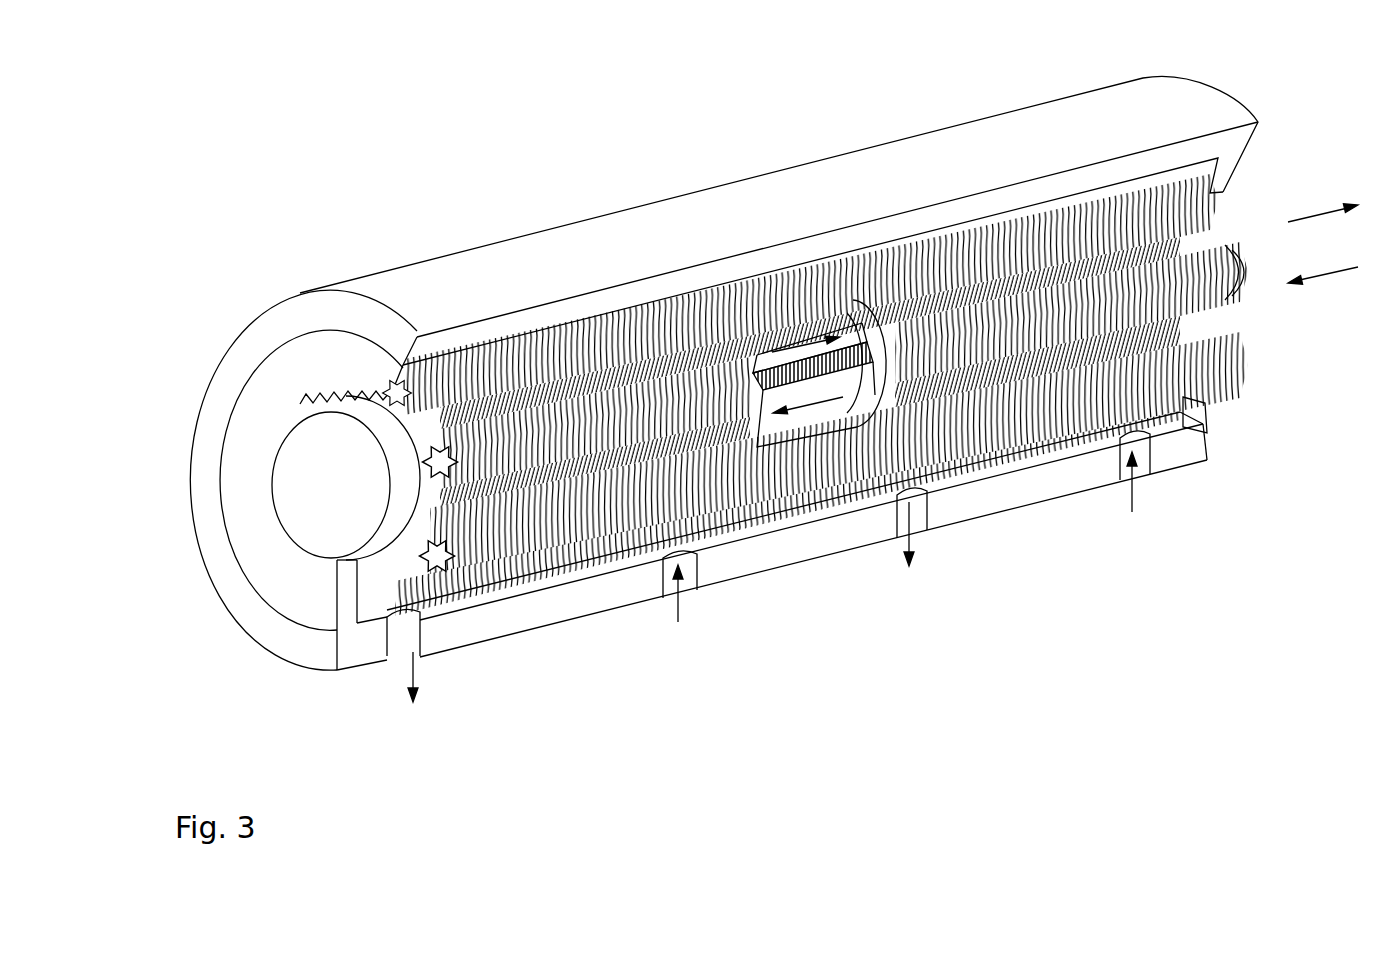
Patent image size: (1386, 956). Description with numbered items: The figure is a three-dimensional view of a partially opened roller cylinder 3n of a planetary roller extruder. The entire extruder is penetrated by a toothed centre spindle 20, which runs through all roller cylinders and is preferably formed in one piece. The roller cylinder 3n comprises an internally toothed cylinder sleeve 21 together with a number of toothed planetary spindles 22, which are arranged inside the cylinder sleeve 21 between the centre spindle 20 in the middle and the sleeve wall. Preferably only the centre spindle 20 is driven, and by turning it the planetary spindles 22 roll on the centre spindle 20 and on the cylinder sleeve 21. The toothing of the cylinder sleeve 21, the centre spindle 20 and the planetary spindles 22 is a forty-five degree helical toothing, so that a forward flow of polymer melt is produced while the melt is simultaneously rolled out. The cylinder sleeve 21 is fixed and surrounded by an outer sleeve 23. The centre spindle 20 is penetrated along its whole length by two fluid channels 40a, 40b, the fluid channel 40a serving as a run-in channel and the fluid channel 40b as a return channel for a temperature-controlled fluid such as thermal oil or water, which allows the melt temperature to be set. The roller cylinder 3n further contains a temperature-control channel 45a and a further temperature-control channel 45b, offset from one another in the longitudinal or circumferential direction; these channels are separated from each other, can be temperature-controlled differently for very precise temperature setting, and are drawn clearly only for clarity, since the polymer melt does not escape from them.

The roller cylinder 3n is at (774, 383).
The centre spindle 20 is at (1158, 322).
The cylinder sleeve 21 is at (820, 260).
The planetary spindles 22 is at (1007, 450).
The outer sleeve 23 is at (707, 247).
The fluid channel 40a is at (810, 423).
The fluid channel 40b is at (757, 355).
The temperature-control channel 45a is at (690, 573).
The further temperature-control channel 45b is at (1143, 460).